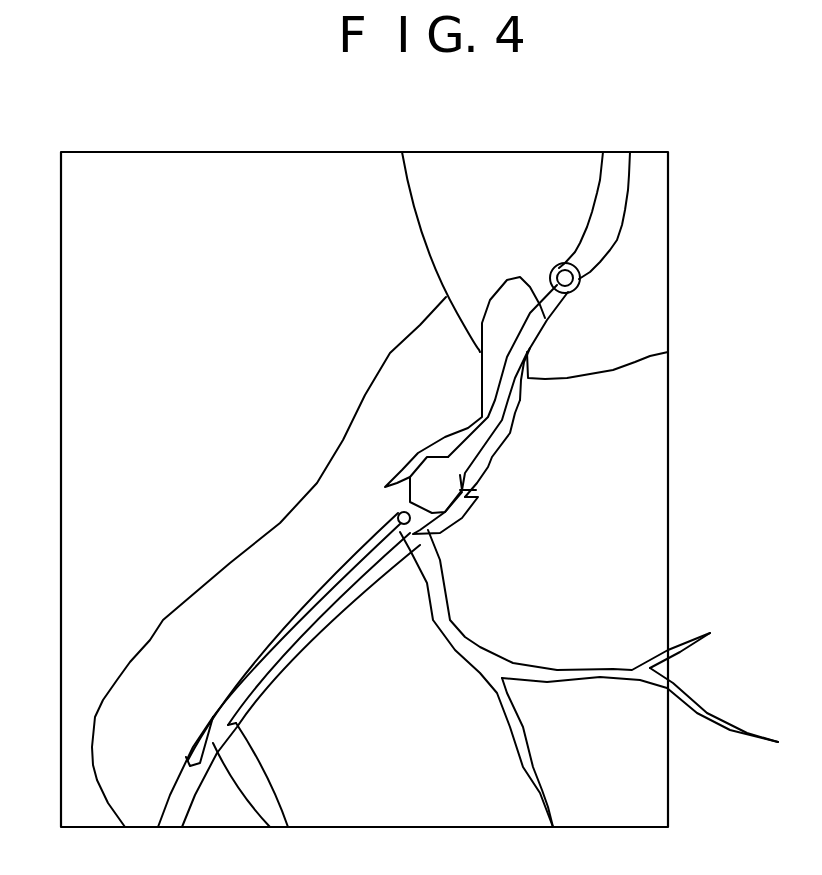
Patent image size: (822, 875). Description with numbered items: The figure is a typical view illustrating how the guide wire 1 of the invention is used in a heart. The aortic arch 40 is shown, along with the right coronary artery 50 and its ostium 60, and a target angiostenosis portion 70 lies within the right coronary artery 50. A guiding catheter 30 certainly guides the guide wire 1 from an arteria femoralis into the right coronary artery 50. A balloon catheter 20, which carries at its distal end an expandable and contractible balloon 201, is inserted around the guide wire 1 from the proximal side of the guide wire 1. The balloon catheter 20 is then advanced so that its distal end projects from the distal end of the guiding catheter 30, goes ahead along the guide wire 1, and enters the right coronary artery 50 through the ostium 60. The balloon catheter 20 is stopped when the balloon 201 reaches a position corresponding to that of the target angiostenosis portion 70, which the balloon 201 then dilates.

The guide wire 1 is at (258, 660).
The balloon catheter 20 is at (503, 415).
The guiding catheter 30 is at (625, 212).
The aortic arch 40 is at (415, 218).
The right coronary artery 50 is at (480, 398).
The ostium of the right coronary artery 60 is at (548, 310).
The target angiostenosis portion 70 is at (462, 513).
The balloon 201 is at (395, 482).